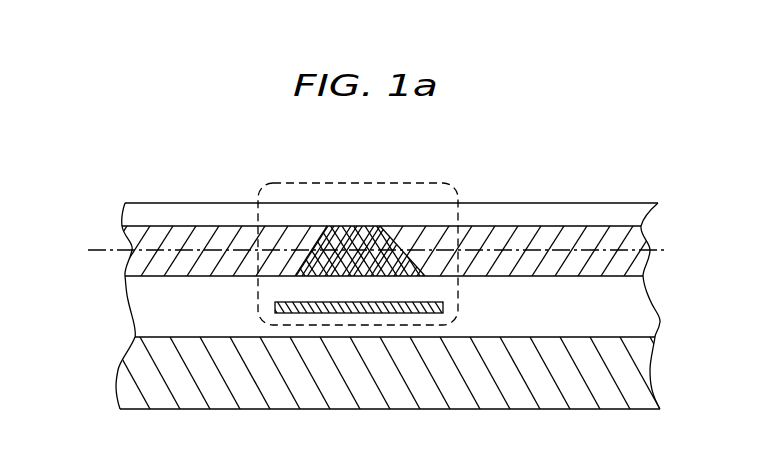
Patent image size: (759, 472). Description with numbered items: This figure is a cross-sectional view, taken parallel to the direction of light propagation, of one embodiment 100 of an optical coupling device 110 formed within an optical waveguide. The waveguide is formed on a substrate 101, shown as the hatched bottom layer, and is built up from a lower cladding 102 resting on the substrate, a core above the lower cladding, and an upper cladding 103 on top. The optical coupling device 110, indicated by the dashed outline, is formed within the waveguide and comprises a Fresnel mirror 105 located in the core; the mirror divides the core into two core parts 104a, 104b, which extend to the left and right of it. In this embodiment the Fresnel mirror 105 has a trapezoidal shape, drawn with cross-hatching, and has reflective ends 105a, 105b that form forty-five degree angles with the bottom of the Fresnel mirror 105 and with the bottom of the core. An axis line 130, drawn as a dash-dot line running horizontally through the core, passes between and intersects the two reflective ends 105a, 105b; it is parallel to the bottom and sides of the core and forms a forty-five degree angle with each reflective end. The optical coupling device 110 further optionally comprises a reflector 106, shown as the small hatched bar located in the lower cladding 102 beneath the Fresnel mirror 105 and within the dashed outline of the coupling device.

The embodiment of optical coupling device 100 is at (380, 124).
The substrate 101 is at (137, 388).
The lower cladding 102 is at (145, 318).
The upper cladding 103 is at (180, 212).
The core part 104a is at (132, 267).
The core part 104b is at (578, 233).
The Fresnel mirror 105 is at (363, 225).
The reflective end 105a is at (328, 240).
The reflective end 105b is at (405, 230).
The reflector 106 is at (415, 312).
The optical coupling device 110 is at (260, 193).
The axis line 130 is at (100, 248).